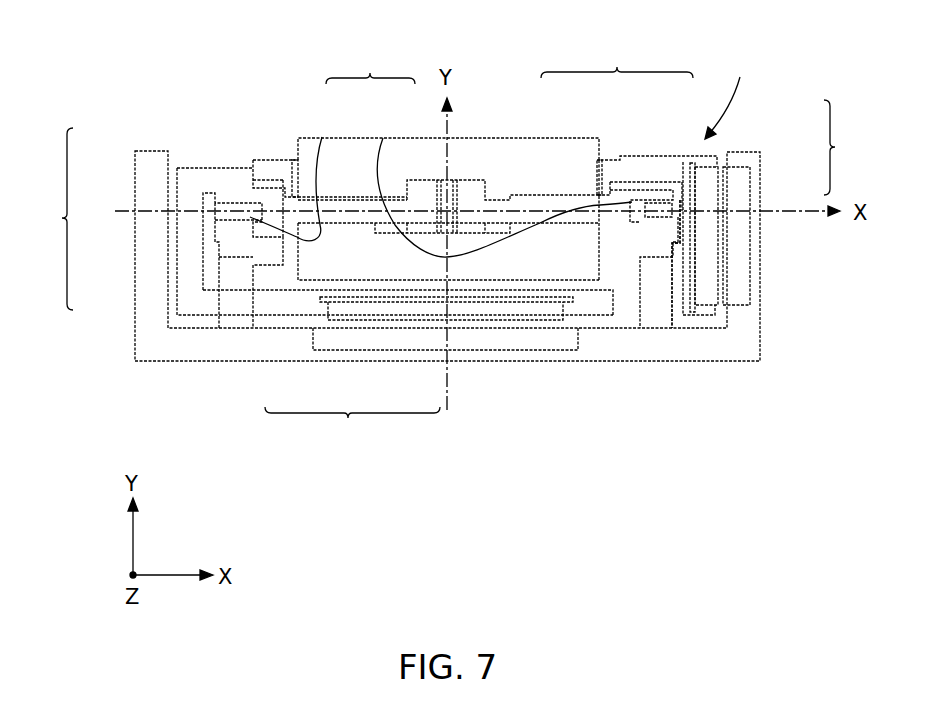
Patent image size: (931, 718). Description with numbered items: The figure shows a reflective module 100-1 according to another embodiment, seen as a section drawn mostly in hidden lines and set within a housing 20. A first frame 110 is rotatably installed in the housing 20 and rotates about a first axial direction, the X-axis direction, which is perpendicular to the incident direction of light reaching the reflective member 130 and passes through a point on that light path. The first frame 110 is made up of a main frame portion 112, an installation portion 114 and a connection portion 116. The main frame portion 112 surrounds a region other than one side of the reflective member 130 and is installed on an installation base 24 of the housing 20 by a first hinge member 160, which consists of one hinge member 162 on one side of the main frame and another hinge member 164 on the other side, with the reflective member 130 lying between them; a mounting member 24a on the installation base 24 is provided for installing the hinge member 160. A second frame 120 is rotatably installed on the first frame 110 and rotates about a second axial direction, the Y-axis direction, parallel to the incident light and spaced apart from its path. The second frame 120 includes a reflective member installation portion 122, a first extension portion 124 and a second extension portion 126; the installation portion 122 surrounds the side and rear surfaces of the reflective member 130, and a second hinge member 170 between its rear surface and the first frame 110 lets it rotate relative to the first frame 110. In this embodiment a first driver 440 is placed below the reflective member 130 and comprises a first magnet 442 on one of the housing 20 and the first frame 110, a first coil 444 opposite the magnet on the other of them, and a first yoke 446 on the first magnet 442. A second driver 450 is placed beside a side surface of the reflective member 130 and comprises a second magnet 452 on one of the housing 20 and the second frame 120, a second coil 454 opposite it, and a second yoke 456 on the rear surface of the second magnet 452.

The housing 20 is at (700, 347).
The installation base 24 is at (647, 302).
The mounting member 24a is at (668, 280).
The reflective module 100-1 is at (738, 97).
The first frame 110 is at (45, 219).
The main frame portion 112 is at (293, 210).
The installation portion 114 is at (263, 300).
The connection portion 116 is at (187, 235).
The second frame 120 is at (617, 60).
The reflective member installation portion 122 is at (467, 175).
The first extension portion 124 is at (655, 165).
The second extension portion 126 is at (680, 200).
The reflective member 130 is at (487, 153).
The first hinge member 160 is at (370, 66).
The 1-1 hinge member 162 is at (383, 138).
The 1-2 hinge member 164 is at (322, 137).
The second hinge member 170 is at (441, 190).
The first driver 440 is at (352, 427).
The first magnet 442 is at (347, 313).
The first coil 444 is at (422, 337).
The first yoke 446 is at (320, 302).
The second driver 450 is at (851, 147).
The second magnet 452 is at (710, 183).
The second coil 454 is at (740, 187).
The second yoke 456 is at (703, 157).